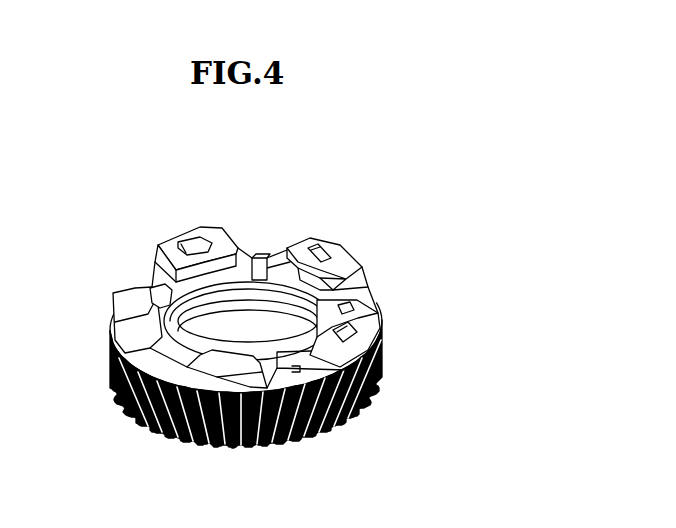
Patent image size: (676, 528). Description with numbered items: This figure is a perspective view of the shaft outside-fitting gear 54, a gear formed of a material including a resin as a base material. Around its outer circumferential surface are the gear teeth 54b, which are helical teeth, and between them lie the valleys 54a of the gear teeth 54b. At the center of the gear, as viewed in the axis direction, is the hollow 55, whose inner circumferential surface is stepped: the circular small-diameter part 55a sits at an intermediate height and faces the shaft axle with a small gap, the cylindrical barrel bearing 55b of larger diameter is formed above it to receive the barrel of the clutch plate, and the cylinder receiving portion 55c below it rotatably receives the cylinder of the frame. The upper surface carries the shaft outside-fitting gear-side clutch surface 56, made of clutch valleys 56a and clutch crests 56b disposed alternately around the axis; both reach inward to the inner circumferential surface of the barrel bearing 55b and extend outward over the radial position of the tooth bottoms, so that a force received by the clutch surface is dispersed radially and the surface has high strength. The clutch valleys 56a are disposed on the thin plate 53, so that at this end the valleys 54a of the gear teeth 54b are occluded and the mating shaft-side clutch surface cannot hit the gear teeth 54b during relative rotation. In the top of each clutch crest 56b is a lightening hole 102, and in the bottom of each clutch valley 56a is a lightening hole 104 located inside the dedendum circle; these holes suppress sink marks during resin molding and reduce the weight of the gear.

The thin plate 53 is at (123, 380).
The shaft outside-fitting gear 54 is at (463, 152).
The valleys of the gear teeth 54a is at (349, 402).
The gear teeth 54b is at (395, 360).
The hollow 55 is at (222, 335).
The small-diameter part 55a is at (290, 265).
The barrel bearing 55b is at (280, 242).
The cylinder receiving portion 55c is at (318, 282).
The shaft outside-fitting gear-side clutch surface 56 is at (508, 265).
The clutch valleys 56a is at (340, 297).
The clutch crests 56b is at (380, 306).
The lightening hole 102 is at (191, 240).
The lightening hole 104 is at (262, 252).